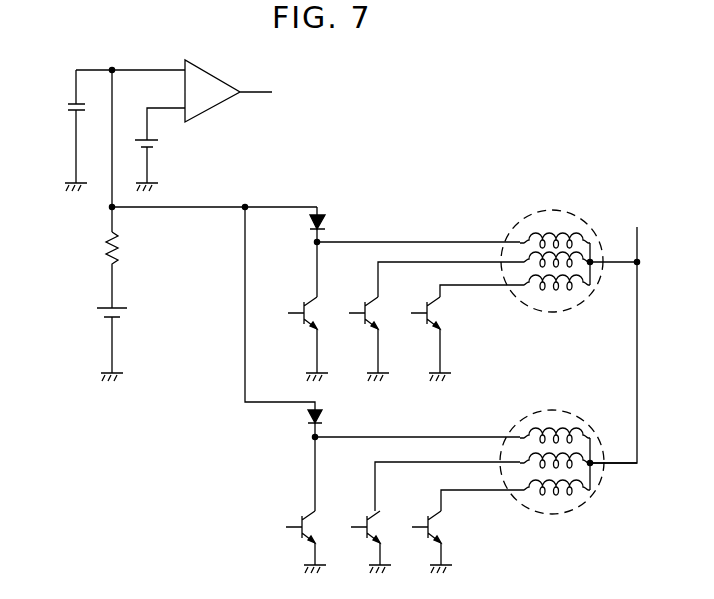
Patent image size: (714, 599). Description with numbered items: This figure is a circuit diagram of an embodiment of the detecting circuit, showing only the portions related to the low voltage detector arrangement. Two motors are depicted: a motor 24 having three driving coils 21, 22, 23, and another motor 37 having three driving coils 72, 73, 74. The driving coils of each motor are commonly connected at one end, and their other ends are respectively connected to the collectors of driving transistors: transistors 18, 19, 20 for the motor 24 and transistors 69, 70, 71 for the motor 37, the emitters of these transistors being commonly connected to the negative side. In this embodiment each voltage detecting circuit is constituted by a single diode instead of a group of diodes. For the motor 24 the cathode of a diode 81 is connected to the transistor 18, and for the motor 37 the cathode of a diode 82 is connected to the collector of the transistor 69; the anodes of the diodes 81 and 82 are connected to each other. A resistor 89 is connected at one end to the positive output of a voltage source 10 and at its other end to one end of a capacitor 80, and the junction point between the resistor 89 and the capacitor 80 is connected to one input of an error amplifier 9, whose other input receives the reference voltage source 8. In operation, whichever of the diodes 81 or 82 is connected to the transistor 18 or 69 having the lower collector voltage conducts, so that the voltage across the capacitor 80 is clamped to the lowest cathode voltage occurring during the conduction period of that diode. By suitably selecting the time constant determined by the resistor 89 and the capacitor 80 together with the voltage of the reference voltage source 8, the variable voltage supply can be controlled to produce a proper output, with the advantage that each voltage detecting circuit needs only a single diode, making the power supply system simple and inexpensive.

The error amplifier 9 is at (222, 68).
The capacitor 80 is at (62, 106).
The reference voltage source 8 is at (160, 145).
The resistor 89 is at (118, 254).
The voltage source 10 is at (126, 317).
The diode 81 is at (326, 217).
The diode 82 is at (307, 413).
The transistor 18 is at (309, 333).
The transistor 19 is at (370, 333).
The transistor 20 is at (432, 333).
The driving coil 21 is at (528, 235).
The driving coil 22 is at (562, 264).
The driving coil 23 is at (566, 290).
The motor 24 is at (569, 256).
The transistor 69 is at (308, 547).
The transistor 70 is at (372, 547).
The transistor 71 is at (433, 547).
The driving coil 72 is at (530, 430).
The driving coil 73 is at (562, 466).
The driving coil 74 is at (563, 495).
The motor 37 is at (564, 467).